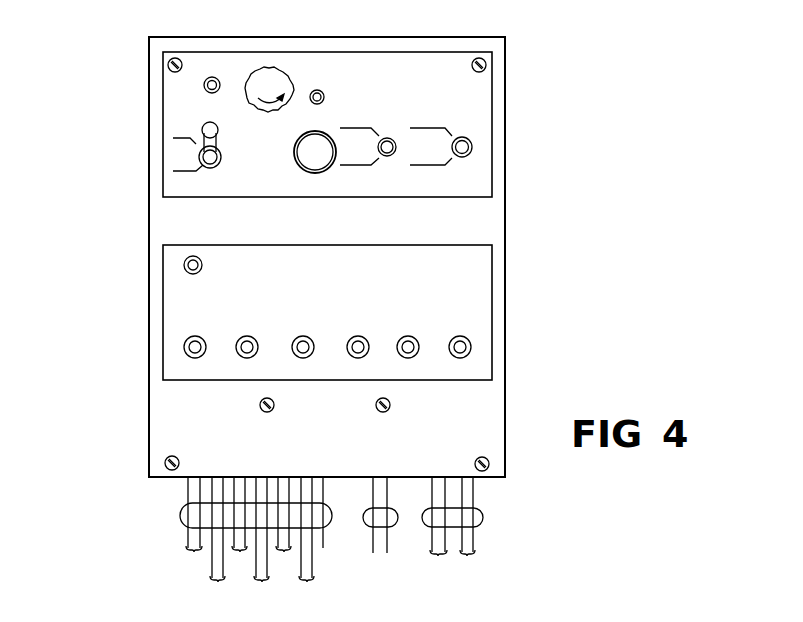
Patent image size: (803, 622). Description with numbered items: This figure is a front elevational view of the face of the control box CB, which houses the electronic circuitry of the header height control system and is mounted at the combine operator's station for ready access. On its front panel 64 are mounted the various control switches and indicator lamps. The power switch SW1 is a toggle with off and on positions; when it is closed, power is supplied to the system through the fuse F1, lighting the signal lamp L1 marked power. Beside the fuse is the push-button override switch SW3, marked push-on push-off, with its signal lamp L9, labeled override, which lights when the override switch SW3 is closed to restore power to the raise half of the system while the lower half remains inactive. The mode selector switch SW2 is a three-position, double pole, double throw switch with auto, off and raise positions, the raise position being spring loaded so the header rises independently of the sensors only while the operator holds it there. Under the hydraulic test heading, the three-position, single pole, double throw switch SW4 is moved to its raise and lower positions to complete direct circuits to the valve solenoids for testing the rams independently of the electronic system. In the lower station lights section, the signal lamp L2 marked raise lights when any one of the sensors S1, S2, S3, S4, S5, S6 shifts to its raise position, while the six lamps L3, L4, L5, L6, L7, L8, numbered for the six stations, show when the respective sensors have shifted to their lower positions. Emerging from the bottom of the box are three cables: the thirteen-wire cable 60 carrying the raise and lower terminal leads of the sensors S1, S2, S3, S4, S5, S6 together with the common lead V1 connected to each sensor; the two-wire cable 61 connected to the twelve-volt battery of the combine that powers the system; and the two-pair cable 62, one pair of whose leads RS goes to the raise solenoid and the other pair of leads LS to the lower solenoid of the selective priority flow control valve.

The control box CB is at (86, 319).
The front panel 64 is at (497, 220).
The signal lamp L1 is at (212, 77).
The fuse F1 is at (270, 80).
The signal lamp L9 is at (311, 104).
The power switch SW1 is at (209, 162).
The mode selector switch SW2 is at (387, 139).
The override switch SW3 is at (303, 155).
The hydraulic test switch SW4 is at (468, 146).
The signal lamp L2 is at (186, 265).
The signal lamp L3 is at (198, 338).
The signal lamp L4 is at (250, 338).
The signal lamp L5 is at (303, 338).
The signal lamp L6 is at (362, 338).
The signal lamp L7 is at (412, 338).
The signal lamp L8 is at (463, 338).
The thirteen-wire cable 60 is at (182, 512).
The two-wire cable 61 is at (366, 511).
The two-pair cable 62 is at (481, 512).
The sensor S1 is at (194, 562).
The sensor S2 is at (218, 592).
The sensor S3 is at (242, 562).
The sensor S4 is at (262, 592).
The sensor S5 is at (284, 562).
The sensor S6 is at (307, 592).
The common lead V1 is at (328, 569).
The raise solenoid leads RS is at (436, 564).
The lower solenoid leads LS is at (466, 564).